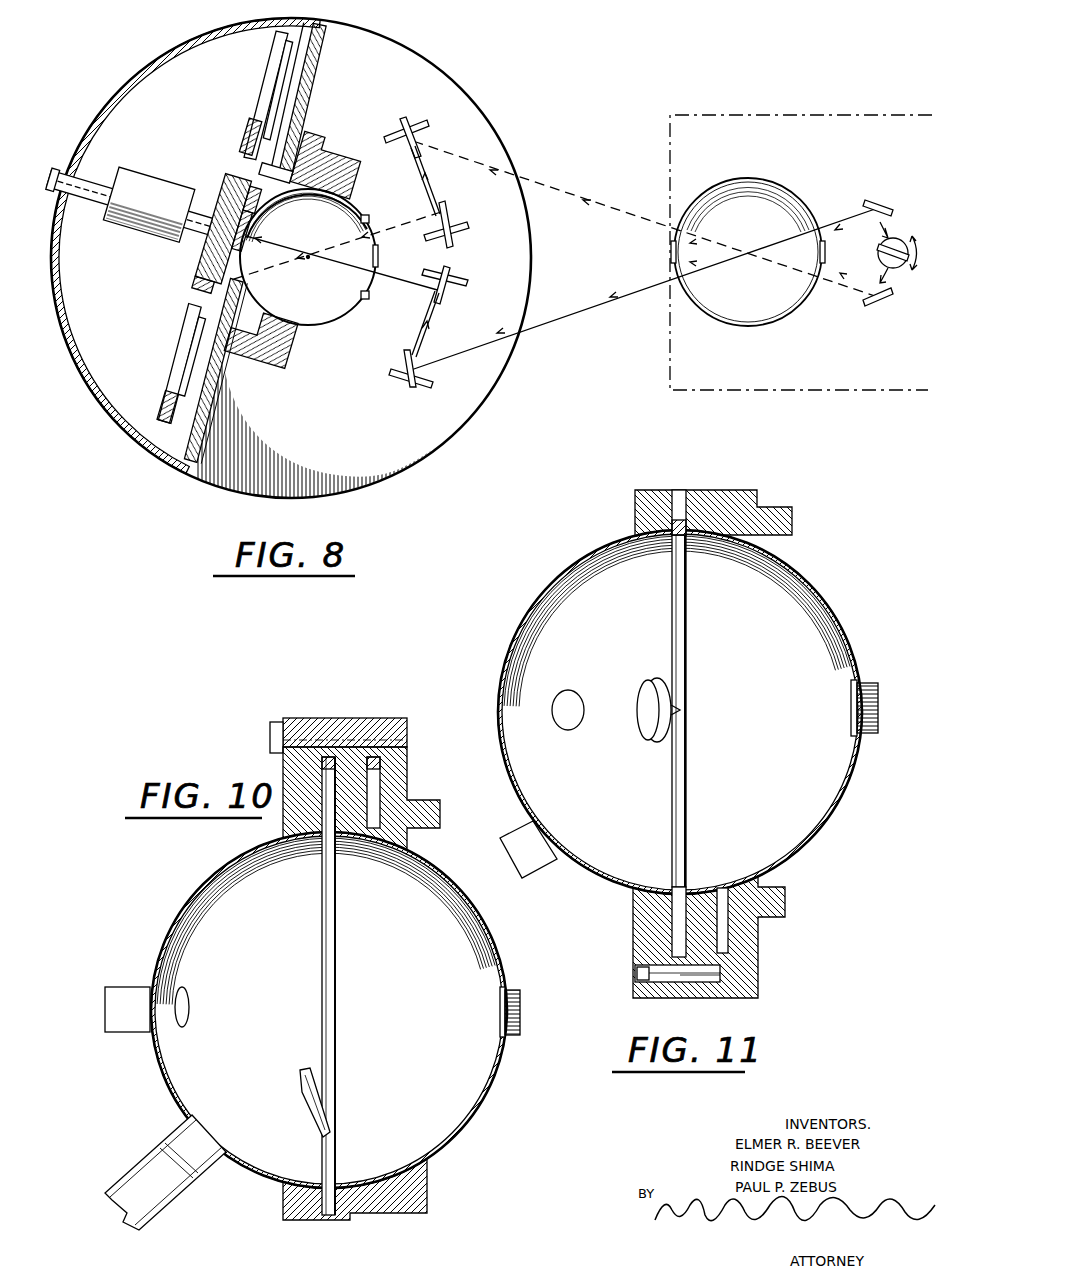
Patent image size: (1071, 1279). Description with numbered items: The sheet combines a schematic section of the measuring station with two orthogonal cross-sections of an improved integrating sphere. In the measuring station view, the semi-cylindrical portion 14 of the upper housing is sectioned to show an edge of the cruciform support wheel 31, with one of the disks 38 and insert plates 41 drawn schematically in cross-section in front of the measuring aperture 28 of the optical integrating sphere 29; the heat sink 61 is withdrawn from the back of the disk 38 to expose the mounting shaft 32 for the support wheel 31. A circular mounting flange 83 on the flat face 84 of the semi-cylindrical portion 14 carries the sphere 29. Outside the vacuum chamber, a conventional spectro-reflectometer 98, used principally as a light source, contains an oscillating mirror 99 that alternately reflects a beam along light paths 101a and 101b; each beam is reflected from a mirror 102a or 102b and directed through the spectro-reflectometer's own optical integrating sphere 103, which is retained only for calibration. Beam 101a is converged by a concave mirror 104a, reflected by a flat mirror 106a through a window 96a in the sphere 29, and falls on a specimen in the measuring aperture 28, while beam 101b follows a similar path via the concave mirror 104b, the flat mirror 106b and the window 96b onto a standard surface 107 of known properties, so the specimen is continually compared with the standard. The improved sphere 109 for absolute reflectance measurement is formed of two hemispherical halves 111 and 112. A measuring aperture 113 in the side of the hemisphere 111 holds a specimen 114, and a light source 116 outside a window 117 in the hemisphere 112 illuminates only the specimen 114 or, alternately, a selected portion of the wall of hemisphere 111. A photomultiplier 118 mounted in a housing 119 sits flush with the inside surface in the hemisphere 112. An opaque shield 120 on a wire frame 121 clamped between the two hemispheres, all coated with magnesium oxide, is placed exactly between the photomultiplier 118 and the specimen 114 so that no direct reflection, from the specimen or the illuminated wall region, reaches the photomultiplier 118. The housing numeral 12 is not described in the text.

In FIG. 8, the optical sphere housing 12 is at (446, 72).
In FIG. 8, the semi-cylindrical portion 14 is at (153, 63).
In FIG. 8, the measuring aperture 28 is at (245, 223).
In FIG. 8, the optical integrating sphere 29 is at (320, 327).
In FIG. 8, the cruciform support wheel 31 is at (240, 167).
In FIG. 8, the mounting shaft 32 is at (203, 207).
In FIG. 8, the disk 38 is at (200, 280).
In FIG. 8, the insert plate 41 is at (200, 258).
In FIG. 8, the heat sink 61 is at (130, 165).
In FIG. 8, the circular mounting flange 83 is at (320, 133).
In FIG. 8, the flat face 84 is at (313, 73).
In FIG. 8, the window 96a is at (374, 285).
In FIG. 8, the window 96b is at (370, 235).
In FIG. 8, the spectro-reflectometer 98 is at (805, 115).
In FIG. 8, the oscillating mirror 99 is at (898, 270).
In FIG. 8, the light beam 101a is at (570, 312).
In FIG. 8, the light beam 101b is at (550, 190).
In FIG. 8, the mirror 102a is at (867, 203).
In FIG. 8, the mirror 102b is at (877, 307).
In FIG. 8, the optical integrating sphere 103 is at (773, 178).
In FIG. 8, the concave mirror 104a is at (433, 363).
In FIG. 8, the concave mirror 104b is at (430, 137).
In FIG. 8, the flat mirror 106a is at (450, 307).
In FIG. 8, the flat mirror 106b is at (450, 205).
In FIG. 8, the standard surface 107 is at (262, 278).
In FIG. 11, the improved sphere 109 is at (823, 573).
In FIG. 10, the improved sphere 109 is at (513, 950).
In FIG. 11, the hemispherical half 111 is at (845, 620).
In FIG. 10, the hemispherical half 111 is at (490, 1088).
In FIG. 11, the hemispherical half 112 is at (582, 552).
In FIG. 10, the hemispherical half 112 is at (165, 1078).
In FIG. 11, the measuring aperture 113 is at (851, 710).
In FIG. 10, the measuring aperture 113 is at (500, 1003).
In FIG. 11, the specimen 114 is at (878, 710).
In FIG. 10, the specimen 114 is at (520, 1003).
In FIG. 11, the light source 116 is at (540, 873).
In FIG. 10, the light source 116 is at (115, 987).
In FIG. 11, the window 117 is at (562, 840).
In FIG. 10, the window 117 is at (190, 1005).
In FIG. 10, the photomultiplier 118 is at (190, 1160).
In FIG. 10, the housing 119 is at (170, 1215).
In FIG. 10, the opaque shield 120 is at (300, 1110).
In FIG. 10, the wire frame 121 is at (335, 1097).